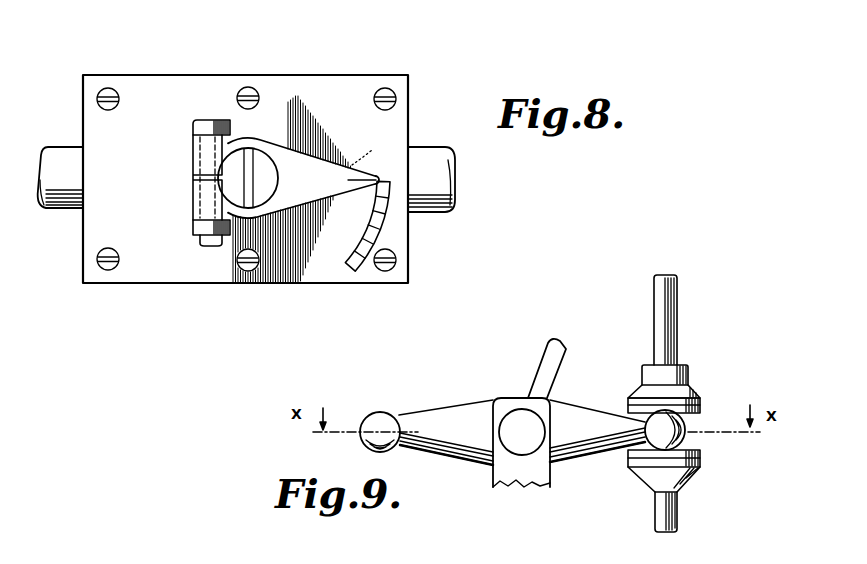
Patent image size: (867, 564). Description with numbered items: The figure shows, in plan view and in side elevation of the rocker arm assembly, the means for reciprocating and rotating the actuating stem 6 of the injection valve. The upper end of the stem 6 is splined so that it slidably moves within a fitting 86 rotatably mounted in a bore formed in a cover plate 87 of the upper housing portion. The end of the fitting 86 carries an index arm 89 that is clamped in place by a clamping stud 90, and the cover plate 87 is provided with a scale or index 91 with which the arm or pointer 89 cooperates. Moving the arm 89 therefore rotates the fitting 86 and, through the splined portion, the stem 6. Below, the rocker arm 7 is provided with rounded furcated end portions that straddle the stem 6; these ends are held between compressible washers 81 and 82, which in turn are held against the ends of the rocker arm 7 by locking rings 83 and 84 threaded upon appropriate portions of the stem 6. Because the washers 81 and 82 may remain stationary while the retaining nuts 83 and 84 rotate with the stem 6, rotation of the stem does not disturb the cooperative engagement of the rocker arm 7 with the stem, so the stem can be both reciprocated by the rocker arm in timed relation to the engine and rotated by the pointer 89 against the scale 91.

In FIG. 8, the cover plate 87 is at (171, 92).
In FIG. 8, the fitting 86 is at (265, 178).
In FIG. 8, the index arm 89 is at (337, 175).
In FIG. 8, the clamping stud 90 is at (200, 243).
In FIG. 8, the scale or index 91 is at (351, 270).
In FIG. 9, the rocker arm 7 is at (502, 413).
In FIG. 9, the locking ring 83 is at (688, 390).
In FIG. 9, the compressible washer 81 is at (700, 410).
In FIG. 9, the compressible washer 82 is at (700, 455).
In FIG. 9, the locking ring 84 is at (688, 482).
In FIG. 9, the actuating stem 6 is at (658, 515).